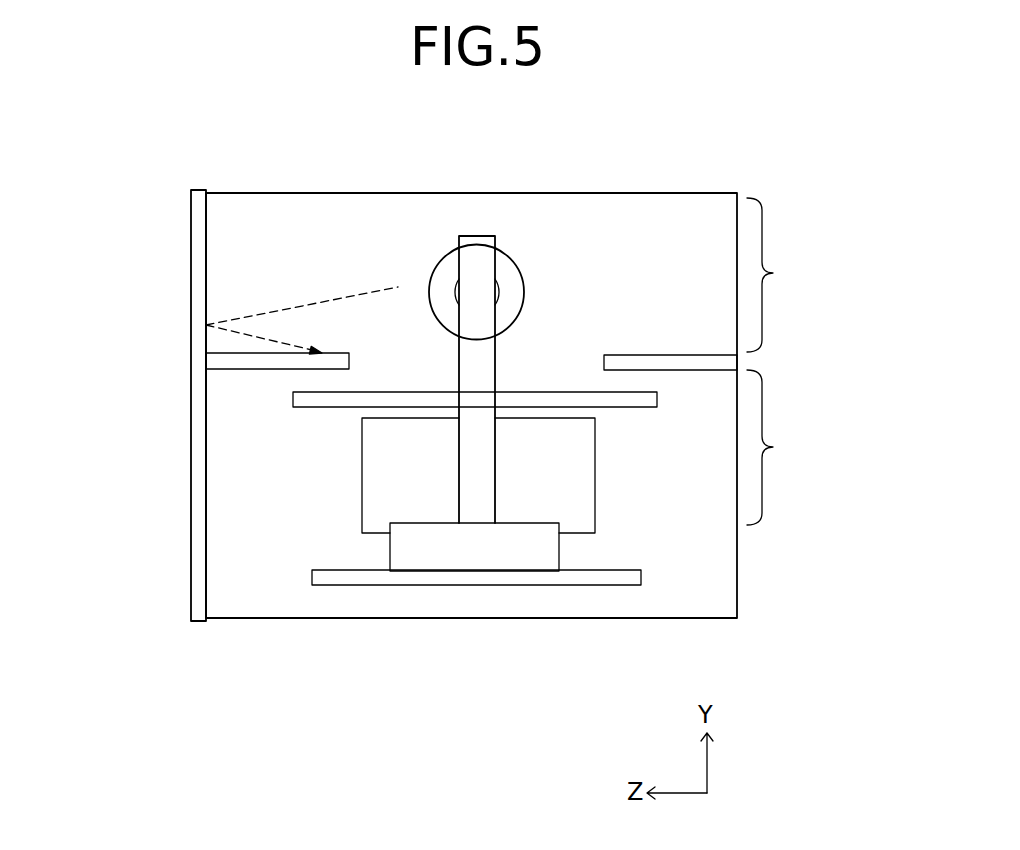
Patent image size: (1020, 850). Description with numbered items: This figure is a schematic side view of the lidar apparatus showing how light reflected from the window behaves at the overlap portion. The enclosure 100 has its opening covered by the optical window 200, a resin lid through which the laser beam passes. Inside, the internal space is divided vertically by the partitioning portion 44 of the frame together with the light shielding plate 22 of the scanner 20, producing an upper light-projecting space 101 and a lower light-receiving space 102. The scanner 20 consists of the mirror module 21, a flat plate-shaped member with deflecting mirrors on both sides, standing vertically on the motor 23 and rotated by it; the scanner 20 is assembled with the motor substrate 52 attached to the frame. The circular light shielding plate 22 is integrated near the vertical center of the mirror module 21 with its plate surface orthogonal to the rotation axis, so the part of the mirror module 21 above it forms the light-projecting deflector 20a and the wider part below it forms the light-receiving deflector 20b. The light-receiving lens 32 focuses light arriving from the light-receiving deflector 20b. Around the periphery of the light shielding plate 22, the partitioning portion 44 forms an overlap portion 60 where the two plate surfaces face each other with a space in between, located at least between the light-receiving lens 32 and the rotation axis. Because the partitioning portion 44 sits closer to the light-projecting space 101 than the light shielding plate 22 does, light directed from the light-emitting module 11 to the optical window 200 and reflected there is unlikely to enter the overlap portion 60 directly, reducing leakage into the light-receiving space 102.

The enclosure 100 is at (672, 193).
The light-projecting space 101 is at (787, 275).
The light-receiving space 102 is at (783, 447).
The optical window 200 is at (197, 250).
The light-emitting module 11 is at (443, 271).
The scanner 20 is at (562, 244).
The light-projecting deflector 20a is at (487, 360).
The light-receiving deflector 20b is at (483, 480).
The mirror module 21 is at (477, 243).
The light shielding plate 22 is at (642, 400).
The motor 23 is at (540, 547).
The light-receiving lens 32 is at (368, 497).
The partitioning portion 44 is at (237, 368).
The motor substrate 52 is at (628, 572).
The overlap portion 60 is at (626, 336).